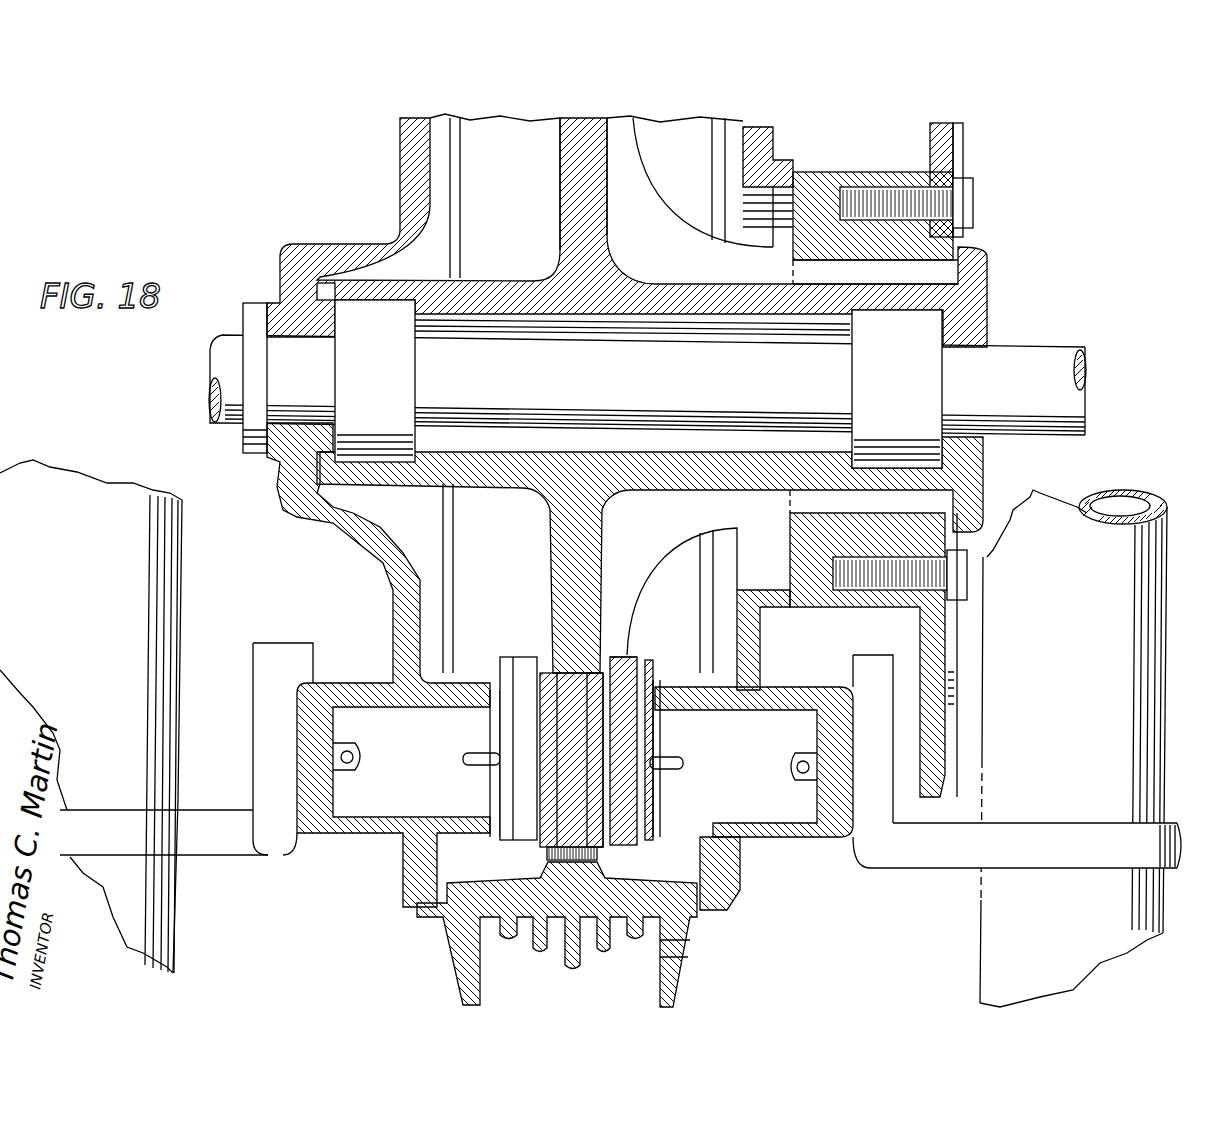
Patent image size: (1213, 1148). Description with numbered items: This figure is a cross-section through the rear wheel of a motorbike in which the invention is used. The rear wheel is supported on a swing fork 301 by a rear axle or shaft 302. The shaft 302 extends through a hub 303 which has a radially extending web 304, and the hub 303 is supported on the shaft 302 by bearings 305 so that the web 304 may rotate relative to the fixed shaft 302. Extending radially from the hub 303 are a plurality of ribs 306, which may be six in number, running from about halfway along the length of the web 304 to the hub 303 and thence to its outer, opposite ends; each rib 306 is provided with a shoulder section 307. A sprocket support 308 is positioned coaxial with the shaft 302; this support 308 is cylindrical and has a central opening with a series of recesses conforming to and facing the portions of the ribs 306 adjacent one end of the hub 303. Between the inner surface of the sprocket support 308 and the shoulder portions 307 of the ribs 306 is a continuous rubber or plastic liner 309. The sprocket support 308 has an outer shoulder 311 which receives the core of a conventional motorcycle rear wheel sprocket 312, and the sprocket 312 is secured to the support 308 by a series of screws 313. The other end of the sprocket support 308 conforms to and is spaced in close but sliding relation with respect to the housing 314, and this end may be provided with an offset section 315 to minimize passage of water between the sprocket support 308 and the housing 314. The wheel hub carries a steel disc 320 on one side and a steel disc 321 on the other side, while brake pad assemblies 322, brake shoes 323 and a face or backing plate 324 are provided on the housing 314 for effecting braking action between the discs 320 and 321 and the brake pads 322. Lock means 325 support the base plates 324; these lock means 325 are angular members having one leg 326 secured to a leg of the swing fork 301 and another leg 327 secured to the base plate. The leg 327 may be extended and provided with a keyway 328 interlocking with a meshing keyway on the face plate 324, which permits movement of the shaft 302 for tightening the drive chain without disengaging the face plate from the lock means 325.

The swing fork 301 is at (163, 573).
The shaft 302 is at (1048, 365).
The hub 303 is at (522, 262).
The web 304 is at (585, 190).
The bearings 305 is at (395, 345).
The ribs 306 is at (650, 225).
The shoulder section 307 is at (867, 263).
The sprocket support 308 is at (813, 190).
The liner 309 is at (830, 263).
The outer shoulder 311 is at (985, 248).
The sprocket 312 is at (963, 153).
The screws 313 is at (955, 575).
The housing 314 is at (780, 648).
The offset section 315 is at (745, 597).
The steel disc 320 is at (600, 803).
The steel disc 321 is at (550, 790).
The brake pad assemblies 322 is at (523, 724).
The brake shoes 323 is at (650, 652).
The face or backing plate 324 is at (327, 680).
The lock means 325 is at (230, 838).
The leg 326 is at (1027, 850).
The leg 327 is at (770, 795).
The keyway 328 is at (303, 643).